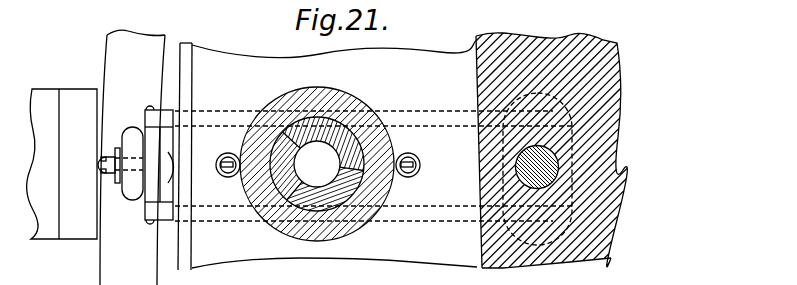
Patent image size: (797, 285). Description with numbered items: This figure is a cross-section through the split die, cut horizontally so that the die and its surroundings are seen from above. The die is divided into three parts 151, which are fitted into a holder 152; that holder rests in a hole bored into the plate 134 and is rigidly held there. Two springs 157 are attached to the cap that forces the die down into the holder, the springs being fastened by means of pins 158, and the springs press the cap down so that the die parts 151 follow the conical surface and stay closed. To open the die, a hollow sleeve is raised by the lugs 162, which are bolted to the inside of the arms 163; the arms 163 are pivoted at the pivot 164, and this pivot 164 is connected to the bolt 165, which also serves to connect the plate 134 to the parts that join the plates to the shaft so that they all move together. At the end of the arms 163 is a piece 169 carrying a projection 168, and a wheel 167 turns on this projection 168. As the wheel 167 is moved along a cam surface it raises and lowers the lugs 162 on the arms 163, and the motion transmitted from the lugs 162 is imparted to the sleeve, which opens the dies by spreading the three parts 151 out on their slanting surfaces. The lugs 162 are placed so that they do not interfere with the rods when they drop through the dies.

The plate 134 is at (610, 82).
The die parts 151 is at (295, 143).
The holder 152 is at (363, 227).
The springs 157 is at (230, 174).
The pins 158 is at (228, 158).
The lugs 162 is at (363, 112).
The arms 163 is at (447, 215).
The pivot 164 is at (612, 250).
The bolt 165 is at (558, 172).
The wheel 167 is at (127, 135).
The projection 168 is at (107, 175).
The piece 169 is at (153, 195).